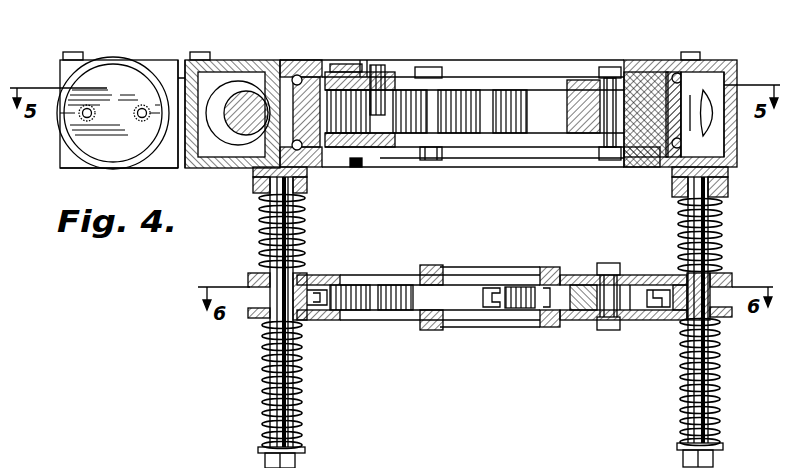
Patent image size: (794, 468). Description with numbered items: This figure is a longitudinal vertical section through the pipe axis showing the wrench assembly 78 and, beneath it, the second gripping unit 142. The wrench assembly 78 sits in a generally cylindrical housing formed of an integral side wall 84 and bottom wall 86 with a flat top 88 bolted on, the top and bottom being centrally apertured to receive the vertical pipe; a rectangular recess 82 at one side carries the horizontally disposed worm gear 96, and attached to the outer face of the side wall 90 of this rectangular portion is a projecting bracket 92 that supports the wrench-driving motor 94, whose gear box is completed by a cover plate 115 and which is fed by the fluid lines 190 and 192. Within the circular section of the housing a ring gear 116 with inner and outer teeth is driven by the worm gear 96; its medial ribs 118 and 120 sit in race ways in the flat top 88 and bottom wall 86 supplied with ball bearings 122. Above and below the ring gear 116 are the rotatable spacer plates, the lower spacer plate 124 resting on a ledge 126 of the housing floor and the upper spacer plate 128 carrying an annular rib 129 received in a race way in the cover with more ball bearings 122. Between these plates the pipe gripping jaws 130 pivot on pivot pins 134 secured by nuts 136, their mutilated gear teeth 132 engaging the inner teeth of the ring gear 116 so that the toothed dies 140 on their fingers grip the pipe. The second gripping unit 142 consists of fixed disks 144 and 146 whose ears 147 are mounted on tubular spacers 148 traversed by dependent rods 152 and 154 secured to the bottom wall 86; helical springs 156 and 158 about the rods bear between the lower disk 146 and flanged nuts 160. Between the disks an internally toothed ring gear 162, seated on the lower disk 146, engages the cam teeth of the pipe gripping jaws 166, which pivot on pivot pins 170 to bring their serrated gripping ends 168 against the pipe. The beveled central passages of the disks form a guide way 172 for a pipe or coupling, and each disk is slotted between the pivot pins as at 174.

The wrench assembly 78 is at (464, 69).
The rectangular recess 82 is at (213, 80).
The side wall 84 is at (736, 77).
The bottom wall 86 is at (664, 170).
The flat top 88 is at (275, 60).
The side wall of the rectangular portion 90 is at (177, 78).
The projecting bracket 92 is at (178, 143).
The wrench-driving motor 94 is at (110, 67).
The worm gear 96 is at (243, 147).
The cover plate 115 is at (62, 58).
The ring gear 116 is at (711, 122).
The upper annular rib 118 is at (697, 70).
The lower annular rib 120 is at (641, 153).
The ball bearings 122 is at (330, 72).
The lower spacer plate 124 is at (377, 147).
The ledge 126 is at (352, 170).
The upper spacer plate 128 is at (365, 80).
The annular rib 129 is at (342, 68).
The pipe gripping jaws 130 is at (576, 90).
The mutilated gear teeth 132 is at (636, 90).
The pivot pin 134 is at (428, 67).
The nuts 136 is at (433, 160).
The engaging die 140 is at (526, 90).
The second gripping unit 142 is at (548, 241).
The upper fixed disk 144 is at (337, 277).
The lower fixed disk 146 is at (327, 320).
The ears 147 is at (260, 275).
The tubular spacers 148 is at (260, 300).
The dependent rod 152 is at (270, 383).
The dependent rod 154 is at (697, 250).
The helical spring 156 is at (300, 413).
The helical spring 158 is at (720, 393).
The flanged nut 160 is at (300, 460).
The ring gear 162 is at (667, 320).
The pipe gripping jaws 166 is at (583, 317).
The gripping end 168 is at (427, 325).
The pivot pin 170 is at (627, 253).
The guide way 172 is at (447, 268).
The slots 174 is at (377, 317).
The line 190 is at (83, 117).
The line 192 is at (137, 120).